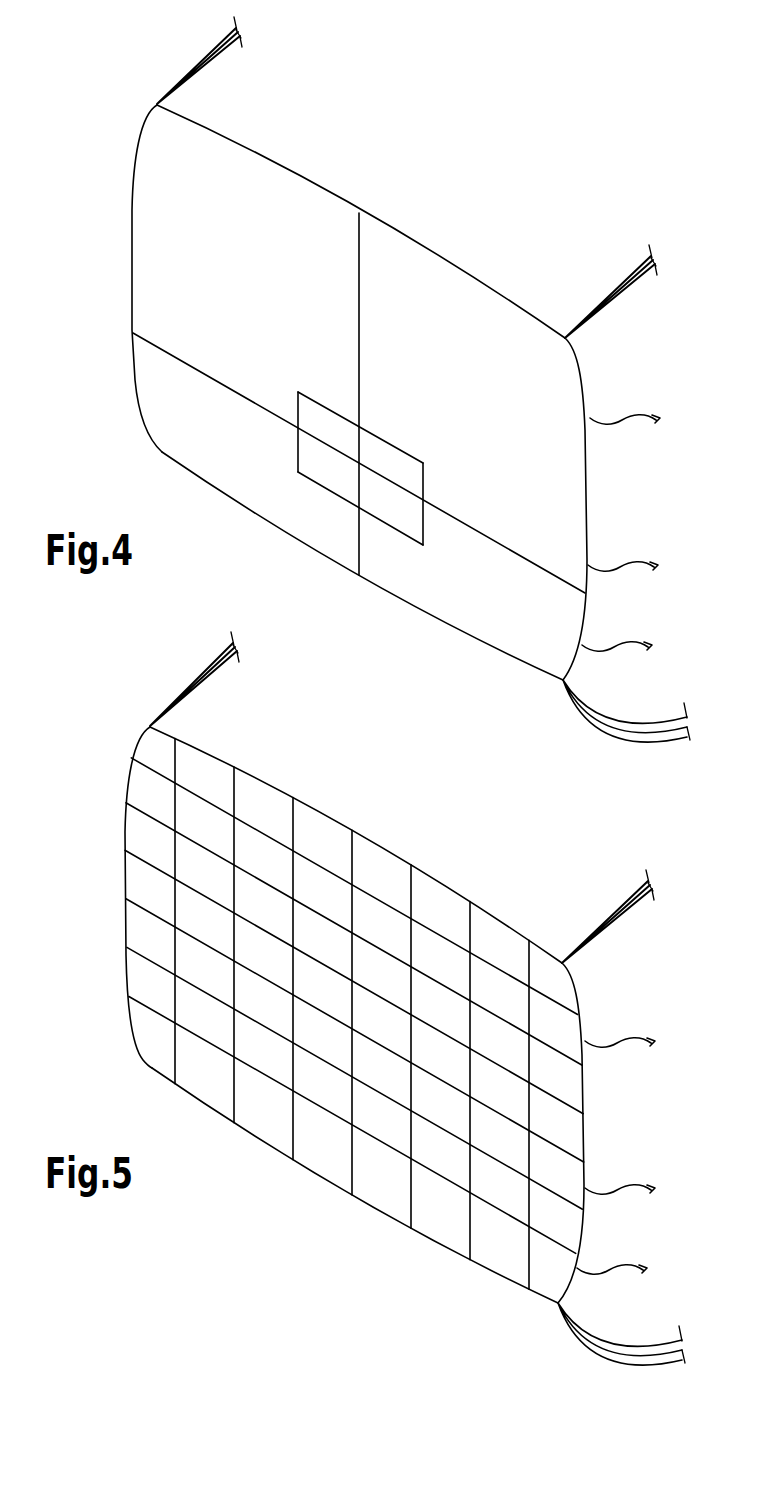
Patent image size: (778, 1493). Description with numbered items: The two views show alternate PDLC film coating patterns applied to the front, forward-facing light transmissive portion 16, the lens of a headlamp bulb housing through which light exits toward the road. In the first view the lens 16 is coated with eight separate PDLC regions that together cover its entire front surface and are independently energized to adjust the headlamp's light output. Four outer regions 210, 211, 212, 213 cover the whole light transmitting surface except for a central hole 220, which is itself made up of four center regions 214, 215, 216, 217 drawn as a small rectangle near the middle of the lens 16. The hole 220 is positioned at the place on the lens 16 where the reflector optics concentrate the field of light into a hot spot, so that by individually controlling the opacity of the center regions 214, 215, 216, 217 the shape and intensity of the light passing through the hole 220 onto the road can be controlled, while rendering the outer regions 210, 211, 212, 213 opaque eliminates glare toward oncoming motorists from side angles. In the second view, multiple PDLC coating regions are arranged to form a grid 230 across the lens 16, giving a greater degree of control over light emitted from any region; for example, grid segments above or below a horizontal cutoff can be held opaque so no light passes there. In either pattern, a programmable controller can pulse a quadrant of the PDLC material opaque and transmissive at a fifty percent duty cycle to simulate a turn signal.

In FIG. 4, the light transmissive portion 16 is at (143, 113).
In FIG. 5, the light transmissive portion 16 is at (145, 730).
In FIG. 4, the PDLC region 210 is at (290, 210).
In FIG. 4, the PDLC region 211 is at (418, 292).
In FIG. 4, the PDLC region 212 is at (467, 613).
In FIG. 4, the PDLC region 213 is at (197, 432).
In FIG. 4, the center region 214 is at (325, 420).
In FIG. 4, the center region 215 is at (400, 462).
In FIG. 4, the center region 216 is at (433, 527).
In FIG. 4, the center region 217 is at (320, 462).
In FIG. 4, the hole 220 is at (378, 448).
In FIG. 5, the grid 230 is at (294, 1127).